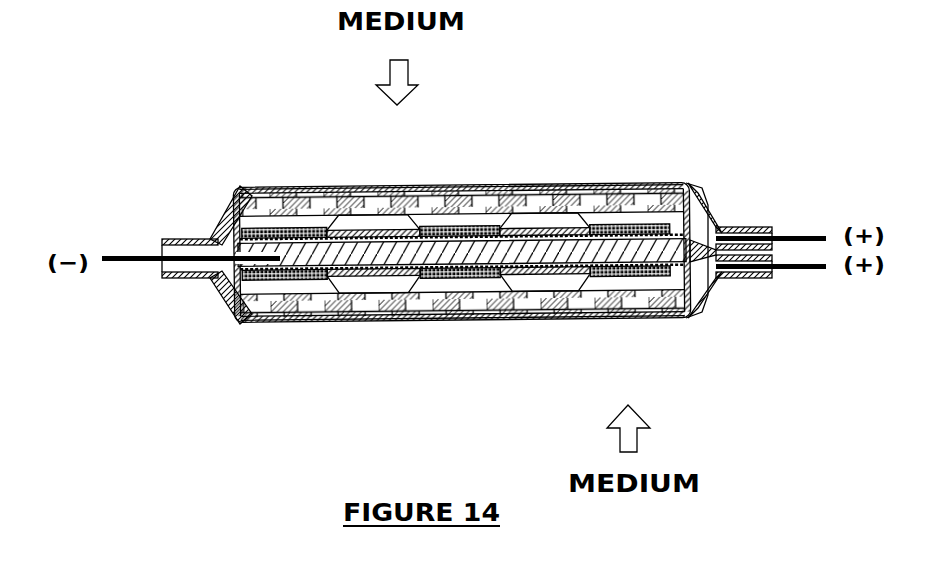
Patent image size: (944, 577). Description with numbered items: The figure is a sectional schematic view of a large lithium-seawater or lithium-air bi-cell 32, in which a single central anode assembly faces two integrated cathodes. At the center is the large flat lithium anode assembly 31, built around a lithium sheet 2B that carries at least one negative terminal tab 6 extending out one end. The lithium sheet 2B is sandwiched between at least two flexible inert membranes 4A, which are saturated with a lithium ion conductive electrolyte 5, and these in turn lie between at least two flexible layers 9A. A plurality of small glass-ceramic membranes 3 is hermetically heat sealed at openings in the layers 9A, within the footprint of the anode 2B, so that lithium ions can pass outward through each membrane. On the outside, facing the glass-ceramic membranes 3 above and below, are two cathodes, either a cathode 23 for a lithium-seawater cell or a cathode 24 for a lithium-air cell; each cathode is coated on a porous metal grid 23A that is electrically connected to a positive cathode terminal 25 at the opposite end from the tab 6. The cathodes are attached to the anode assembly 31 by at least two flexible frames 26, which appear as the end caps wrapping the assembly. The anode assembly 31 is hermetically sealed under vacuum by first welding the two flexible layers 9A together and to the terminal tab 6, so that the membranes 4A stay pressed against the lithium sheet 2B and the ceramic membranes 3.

The lithium sheet 2B is at (538, 247).
The glass-ceramic membranes 3 is at (278, 214).
The flexible inert membranes 4A is at (264, 212).
The lithium ion conductive electrolyte 5 is at (462, 268).
The terminal tab 6 is at (123, 265).
The flexible layers 9A is at (365, 208).
The cathode for lithium-seawater cell 23 is at (403, 207).
The cathode for lithium-air cell 24 is at (462, 249).
The porous metal grid 23A is at (595, 205).
The cathode terminal 25 is at (795, 228).
The flexible frames 26 is at (222, 206).
The lithium anode assembly 31 is at (770, 273).
The bi-cells 32 is at (791, 448).